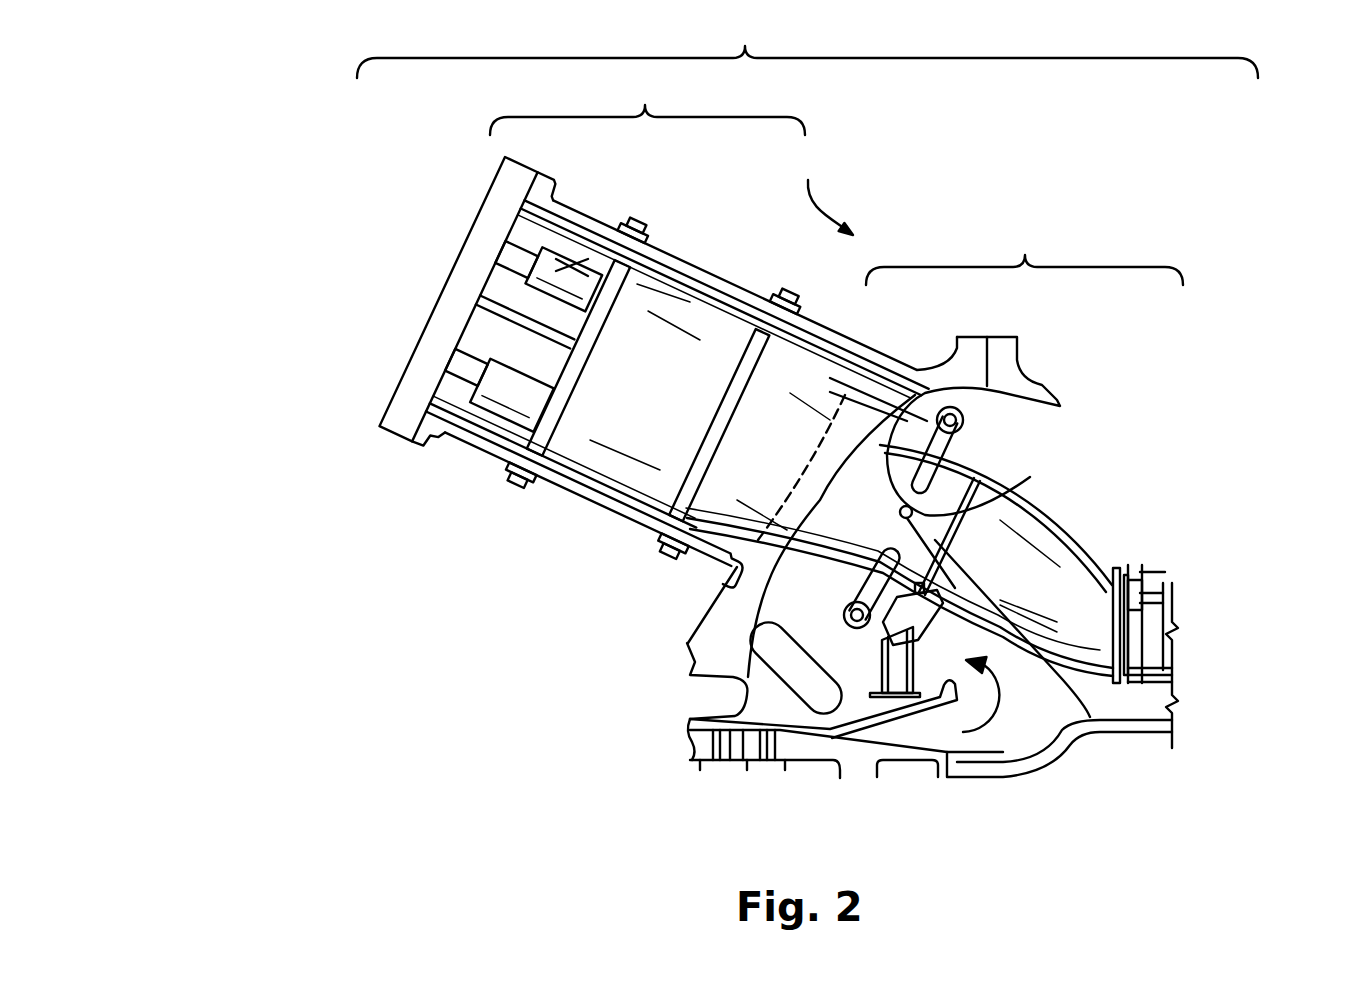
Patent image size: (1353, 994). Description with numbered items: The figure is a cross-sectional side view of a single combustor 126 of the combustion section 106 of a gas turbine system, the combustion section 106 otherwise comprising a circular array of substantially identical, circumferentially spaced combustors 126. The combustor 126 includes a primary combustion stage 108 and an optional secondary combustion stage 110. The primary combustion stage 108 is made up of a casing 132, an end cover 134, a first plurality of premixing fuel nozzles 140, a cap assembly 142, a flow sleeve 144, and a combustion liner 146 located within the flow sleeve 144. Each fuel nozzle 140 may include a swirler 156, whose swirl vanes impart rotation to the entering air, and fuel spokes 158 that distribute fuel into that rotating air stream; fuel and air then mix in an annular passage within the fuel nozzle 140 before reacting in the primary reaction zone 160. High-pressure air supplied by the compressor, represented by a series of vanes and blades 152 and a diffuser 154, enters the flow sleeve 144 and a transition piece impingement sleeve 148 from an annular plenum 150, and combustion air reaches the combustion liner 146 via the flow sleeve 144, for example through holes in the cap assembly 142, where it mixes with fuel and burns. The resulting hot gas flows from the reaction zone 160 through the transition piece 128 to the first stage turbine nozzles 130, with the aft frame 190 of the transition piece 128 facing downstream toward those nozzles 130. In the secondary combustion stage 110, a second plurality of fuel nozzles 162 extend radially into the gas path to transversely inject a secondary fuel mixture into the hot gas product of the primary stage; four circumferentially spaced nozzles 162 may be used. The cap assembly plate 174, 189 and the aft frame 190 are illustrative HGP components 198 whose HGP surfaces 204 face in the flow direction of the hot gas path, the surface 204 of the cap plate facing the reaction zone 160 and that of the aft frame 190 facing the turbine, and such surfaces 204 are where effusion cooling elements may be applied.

The combustion section 106 is at (807, 49).
The primary combustion stage 108 is at (647, 105).
The secondary combustion stage 110 is at (1006, 373).
The combustor 126 is at (821, 195).
The transition piece 128 is at (1060, 527).
The first stage turbine nozzles 130 is at (1158, 680).
The casing 132 is at (683, 270).
The end cover 134 is at (400, 380).
The premixing fuel nozzle 140 is at (521, 250).
The cap assembly 142 is at (359, 311).
The flow sleeve 144 is at (450, 438).
The combustion liner 146 is at (574, 470).
The transition piece impingement sleeve 148 is at (1095, 560).
The annular plenum 150 is at (934, 679).
The vanes and blades 152 is at (823, 770).
The diffuser 154 is at (827, 767).
The swirler 156 is at (587, 265).
The fuel spokes 158 is at (618, 258).
The reaction zone 160 is at (706, 338).
The second plurality of fuel nozzles 162 is at (900, 552).
The cap assembly plate 174 is at (359, 311).
The cap assembly plate 189 is at (522, 348).
The aft frame 190 is at (1165, 572).
The HGP component 198 is at (359, 311).
The HGP surface 204 is at (580, 240).